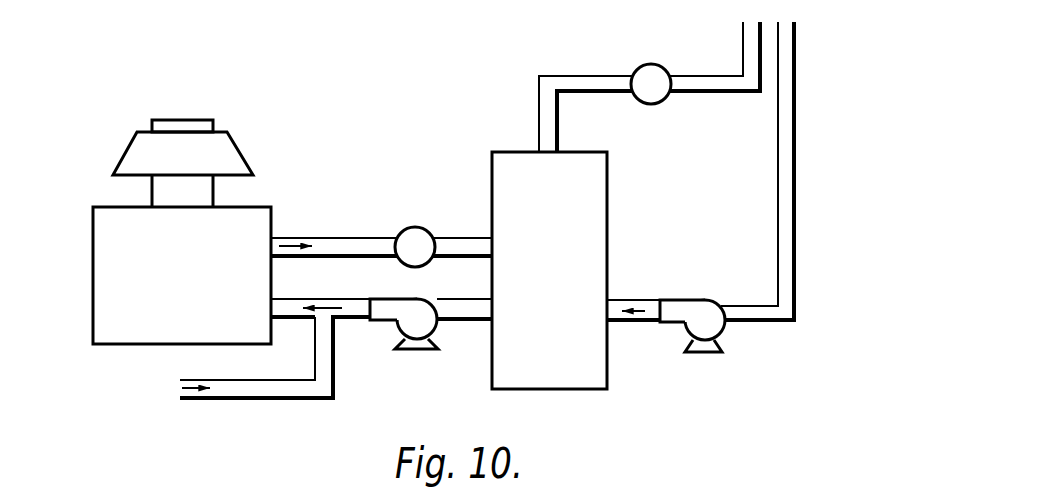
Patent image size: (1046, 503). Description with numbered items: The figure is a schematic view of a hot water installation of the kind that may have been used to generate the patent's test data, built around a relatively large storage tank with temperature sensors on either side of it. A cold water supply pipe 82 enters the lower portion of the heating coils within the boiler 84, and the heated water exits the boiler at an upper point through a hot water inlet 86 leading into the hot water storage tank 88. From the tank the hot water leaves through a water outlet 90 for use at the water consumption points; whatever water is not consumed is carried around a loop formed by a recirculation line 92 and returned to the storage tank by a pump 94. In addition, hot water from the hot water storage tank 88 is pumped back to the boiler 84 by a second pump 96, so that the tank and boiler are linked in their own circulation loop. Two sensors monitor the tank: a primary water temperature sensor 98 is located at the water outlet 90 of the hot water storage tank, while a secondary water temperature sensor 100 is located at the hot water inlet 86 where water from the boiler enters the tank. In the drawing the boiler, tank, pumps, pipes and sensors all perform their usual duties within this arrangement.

The cold water supply pipe 82 is at (272, 388).
The boiler 84 is at (107, 263).
The hot water inlet 86 is at (352, 248).
The hot water storage tank 88 is at (518, 163).
The water outlet 90 is at (565, 80).
The recirculation line 92 is at (783, 215).
The pump 94 is at (702, 312).
The pump 96 is at (412, 313).
The primary water temperature sensor 98 is at (652, 85).
The secondary water temperature sensor 100 is at (408, 257).